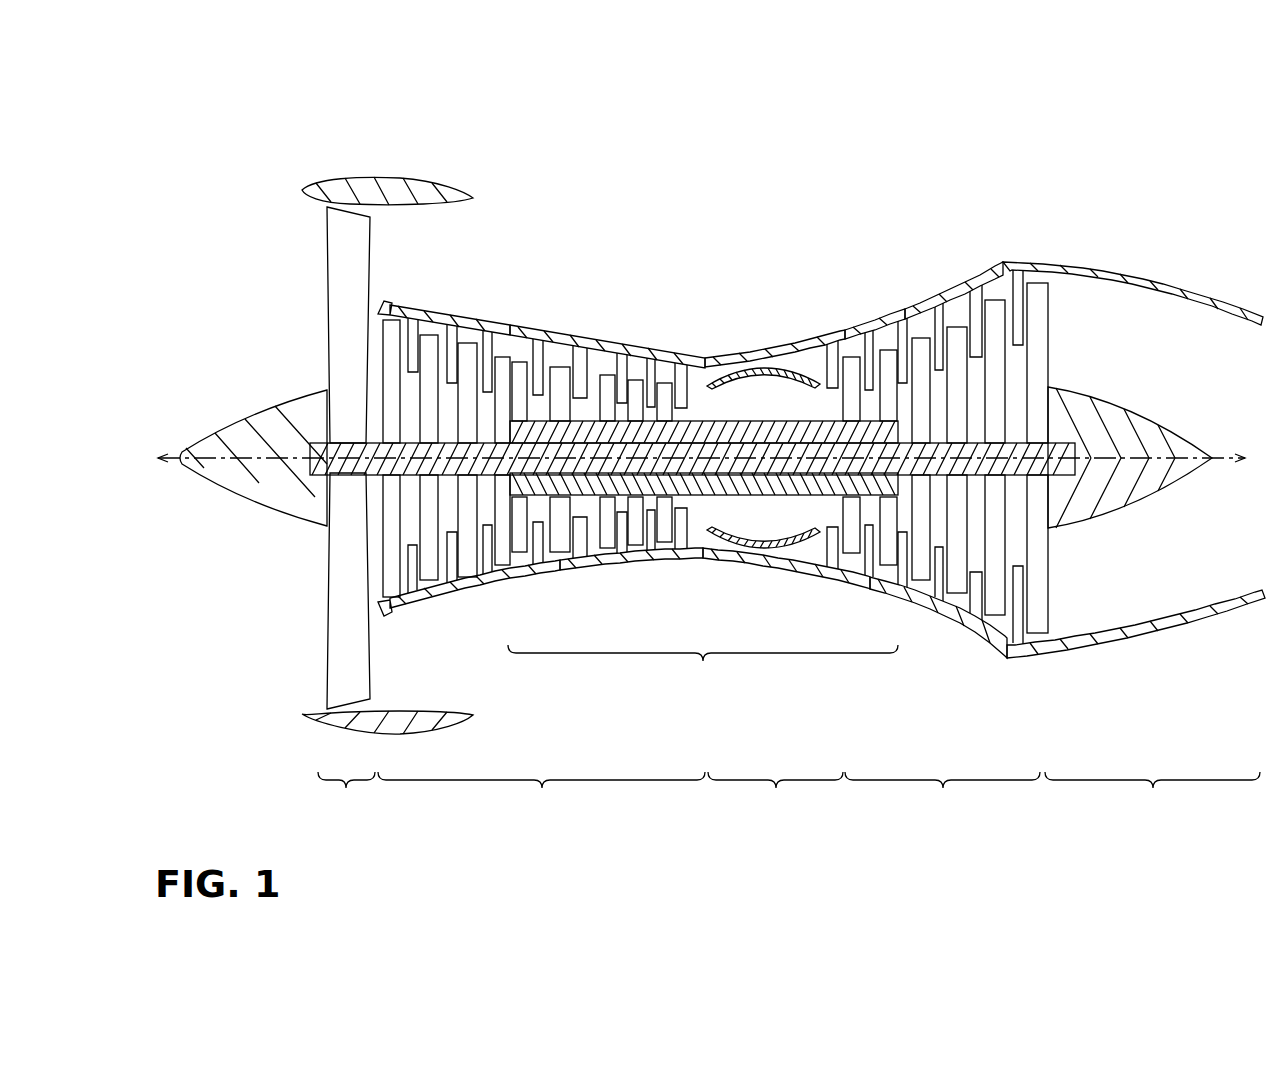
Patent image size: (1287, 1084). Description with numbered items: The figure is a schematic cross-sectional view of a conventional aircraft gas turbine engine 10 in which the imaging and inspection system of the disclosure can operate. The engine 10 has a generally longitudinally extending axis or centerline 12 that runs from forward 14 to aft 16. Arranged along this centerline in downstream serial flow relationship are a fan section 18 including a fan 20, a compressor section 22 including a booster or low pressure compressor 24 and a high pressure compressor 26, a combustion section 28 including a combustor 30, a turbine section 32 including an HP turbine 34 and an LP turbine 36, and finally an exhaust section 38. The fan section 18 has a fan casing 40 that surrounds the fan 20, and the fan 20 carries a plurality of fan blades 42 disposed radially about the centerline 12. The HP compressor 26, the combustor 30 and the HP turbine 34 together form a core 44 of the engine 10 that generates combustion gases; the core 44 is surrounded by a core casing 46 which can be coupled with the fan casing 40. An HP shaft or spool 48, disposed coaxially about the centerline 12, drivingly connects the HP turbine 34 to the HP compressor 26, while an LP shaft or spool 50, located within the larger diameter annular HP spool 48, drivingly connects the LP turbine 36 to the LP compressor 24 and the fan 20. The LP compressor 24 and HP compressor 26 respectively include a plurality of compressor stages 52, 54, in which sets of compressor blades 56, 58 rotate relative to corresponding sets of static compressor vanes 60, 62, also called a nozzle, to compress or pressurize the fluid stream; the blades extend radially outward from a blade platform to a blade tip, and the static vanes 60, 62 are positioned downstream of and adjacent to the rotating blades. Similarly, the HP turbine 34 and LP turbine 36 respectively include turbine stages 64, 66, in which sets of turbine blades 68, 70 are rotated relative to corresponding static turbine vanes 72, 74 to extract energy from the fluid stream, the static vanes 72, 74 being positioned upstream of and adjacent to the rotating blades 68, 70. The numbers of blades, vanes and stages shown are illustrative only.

The gas turbine engine 10 is at (212, 107).
The centerline 12 is at (228, 436).
The forward 14 is at (147, 459).
The aft 16 is at (1255, 459).
The fan section 18 is at (346, 794).
The fan 20 is at (310, 266).
The compressor section 22 is at (541, 568).
The low pressure (LP) compressor 24 is at (504, 600).
The high pressure (HP) compressor 26 is at (649, 573).
The combustion section 28 is at (775, 794).
The combustor 30 is at (818, 361).
The turbine section 32 is at (937, 543).
The HP turbine 34 is at (833, 590).
The LP turbine 36 is at (950, 626).
The exhaust section 38 is at (1134, 539).
The fan casing 40 is at (395, 179).
The fan blades 42 is at (337, 657).
The core 44 is at (703, 557).
The core casing 46 is at (748, 352).
The HP shaft or spool 48 is at (700, 378).
The LP shaft or spool 50 is at (496, 430).
The compressor stages 52 is at (382, 284).
The compressor stages 54 is at (526, 318).
The compressor blades 56 is at (411, 348).
The compressor blades 58 is at (540, 365).
The static compressor vanes 60 is at (450, 360).
The static compressor vanes 62 is at (570, 393).
The turbine stages 64 is at (858, 318).
The turbine stages 66 is at (977, 270).
The turbine blades 68 is at (892, 345).
The turbine blades 70 is at (1000, 302).
The static turbine vanes 72 is at (868, 338).
The static turbine vanes 74 is at (985, 292).